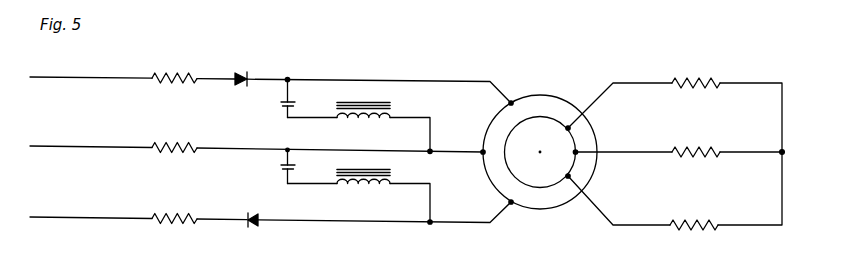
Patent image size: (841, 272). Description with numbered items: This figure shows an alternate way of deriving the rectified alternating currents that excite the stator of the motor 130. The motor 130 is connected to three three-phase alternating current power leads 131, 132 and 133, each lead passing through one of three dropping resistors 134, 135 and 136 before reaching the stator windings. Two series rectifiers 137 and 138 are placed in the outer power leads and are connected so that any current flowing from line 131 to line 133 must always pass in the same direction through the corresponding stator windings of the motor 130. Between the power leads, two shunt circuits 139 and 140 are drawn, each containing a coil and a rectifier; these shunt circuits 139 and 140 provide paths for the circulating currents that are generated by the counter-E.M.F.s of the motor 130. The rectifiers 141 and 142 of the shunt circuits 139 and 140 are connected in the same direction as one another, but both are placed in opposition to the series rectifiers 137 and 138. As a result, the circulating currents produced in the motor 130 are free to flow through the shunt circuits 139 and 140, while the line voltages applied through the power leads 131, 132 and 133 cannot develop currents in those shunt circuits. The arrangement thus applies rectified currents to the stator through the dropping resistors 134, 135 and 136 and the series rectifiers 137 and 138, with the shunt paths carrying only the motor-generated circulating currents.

The motor 130 is at (558, 84).
The power lead 131 is at (84, 62).
The power lead 132 is at (84, 130).
The power lead 133 is at (84, 200).
The dropping resistor 134 is at (177, 71).
The dropping resistor 135 is at (186, 124).
The dropping resistor 136 is at (189, 194).
The series rectifier 137 is at (250, 75).
The series rectifier 138 is at (249, 224).
The shunt circuit 139 is at (309, 117).
The shunt circuit 140 is at (312, 184).
The rectifier 141 is at (282, 105).
The rectifier 142 is at (282, 172).